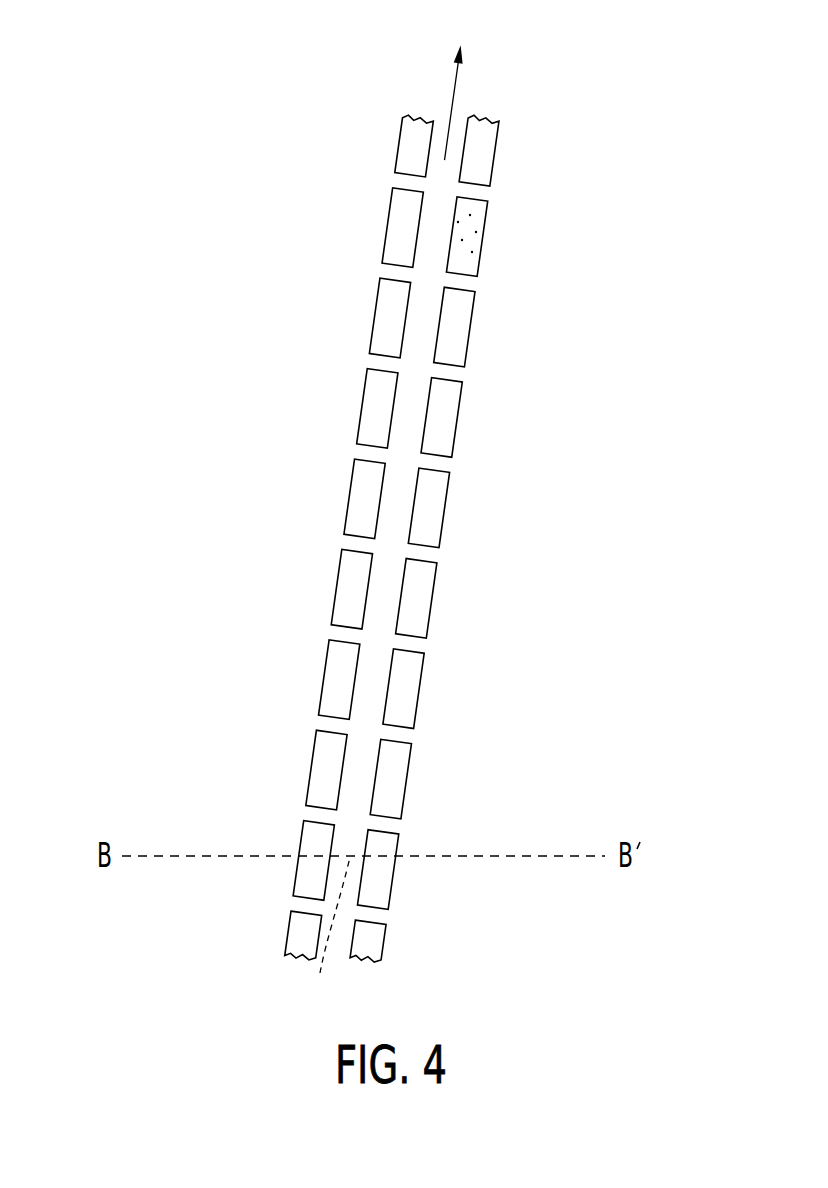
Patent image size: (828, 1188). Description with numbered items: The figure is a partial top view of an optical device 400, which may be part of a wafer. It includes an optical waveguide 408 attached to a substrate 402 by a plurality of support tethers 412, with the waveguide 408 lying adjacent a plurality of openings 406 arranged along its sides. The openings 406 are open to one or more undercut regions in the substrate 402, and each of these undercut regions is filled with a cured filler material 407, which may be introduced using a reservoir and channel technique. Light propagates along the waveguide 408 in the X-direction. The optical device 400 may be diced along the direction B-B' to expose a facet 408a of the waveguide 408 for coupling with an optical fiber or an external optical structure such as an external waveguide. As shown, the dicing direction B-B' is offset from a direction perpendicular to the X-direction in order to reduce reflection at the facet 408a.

The optical device 400 is at (407, 513).
The substrate 402 is at (466, 562).
The openings 406 is at (451, 538).
The cured filler material 407 is at (470, 215).
The optical waveguide 408 is at (380, 589).
The facet 408a is at (325, 934).
The support tethers 412 is at (448, 372).